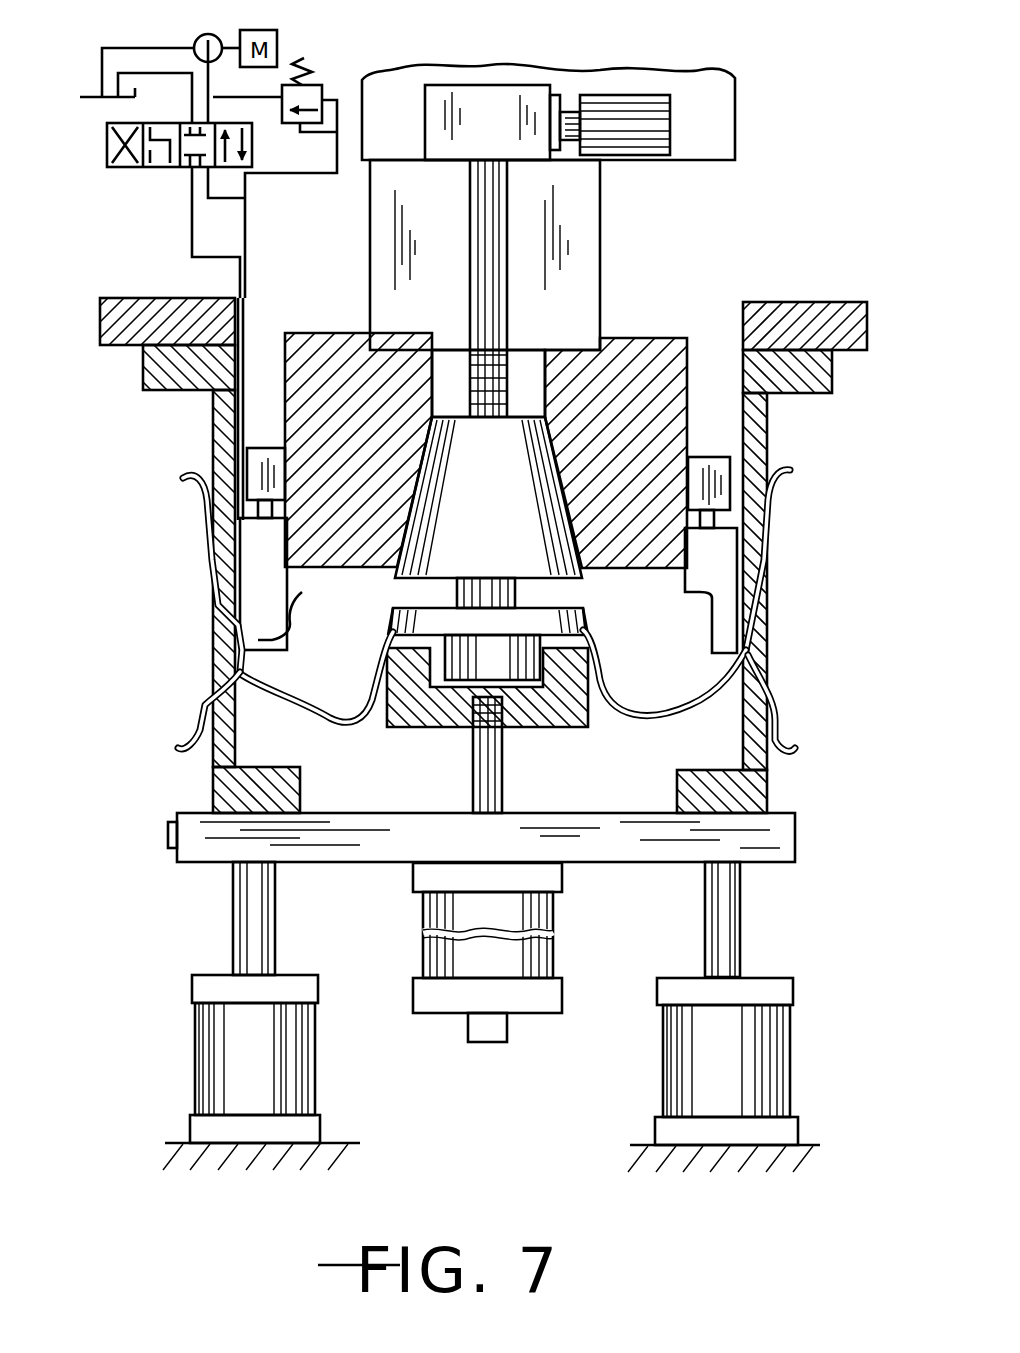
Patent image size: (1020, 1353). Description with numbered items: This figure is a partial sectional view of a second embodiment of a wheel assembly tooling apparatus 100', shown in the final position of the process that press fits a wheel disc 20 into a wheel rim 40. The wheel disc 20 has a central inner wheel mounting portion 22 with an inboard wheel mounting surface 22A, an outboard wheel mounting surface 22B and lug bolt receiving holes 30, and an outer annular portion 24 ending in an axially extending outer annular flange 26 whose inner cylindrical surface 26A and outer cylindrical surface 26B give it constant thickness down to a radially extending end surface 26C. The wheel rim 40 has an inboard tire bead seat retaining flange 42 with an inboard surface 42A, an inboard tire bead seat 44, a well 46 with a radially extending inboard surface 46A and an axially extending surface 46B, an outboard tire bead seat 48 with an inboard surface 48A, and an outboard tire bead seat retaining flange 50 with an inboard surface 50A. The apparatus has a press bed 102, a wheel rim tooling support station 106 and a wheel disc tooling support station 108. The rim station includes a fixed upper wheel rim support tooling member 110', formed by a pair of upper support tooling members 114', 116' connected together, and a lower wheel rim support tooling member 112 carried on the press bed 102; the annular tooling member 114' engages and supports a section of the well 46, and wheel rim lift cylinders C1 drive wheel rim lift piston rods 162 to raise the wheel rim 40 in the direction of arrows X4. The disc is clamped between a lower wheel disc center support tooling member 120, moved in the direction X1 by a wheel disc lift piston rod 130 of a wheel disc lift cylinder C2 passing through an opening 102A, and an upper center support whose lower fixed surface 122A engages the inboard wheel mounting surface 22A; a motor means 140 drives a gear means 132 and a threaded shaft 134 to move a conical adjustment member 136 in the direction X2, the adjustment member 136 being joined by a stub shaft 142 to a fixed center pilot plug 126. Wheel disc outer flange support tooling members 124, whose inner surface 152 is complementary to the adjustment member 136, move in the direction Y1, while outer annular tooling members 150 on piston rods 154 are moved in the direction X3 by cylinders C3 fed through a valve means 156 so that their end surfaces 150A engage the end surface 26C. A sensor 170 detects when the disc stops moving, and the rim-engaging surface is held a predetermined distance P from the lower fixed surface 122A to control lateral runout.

The wheel assembly tooling apparatus 100' is at (97, 480).
The press bed 102 is at (798, 845).
The opening 102A is at (480, 862).
The wheel rim tooling support station 106 is at (808, 418).
The wheel disc tooling support station 108 is at (510, 772).
The upper wheel rim support tooling member 110' is at (808, 498).
The lower wheel rim support tooling member 112 is at (305, 780).
The upper support tooling member 114' is at (153, 556).
The upper support tooling member 116' is at (153, 293).
The lower wheel disc center support tooling member 120 is at (572, 730).
The lower fixed surface 122A is at (562, 627).
The wheel disc outer flange support tooling member 124 is at (325, 348).
The fixed center pilot plug 126 is at (500, 680).
The wheel disc lift piston rod 130 is at (505, 792).
The gear means 132 is at (565, 58).
The threaded shaft 134 is at (478, 222).
The adjustment member 136 is at (518, 485).
The motor means 140 is at (672, 120).
The stub shaft 142 is at (520, 598).
The outer annular tooling member 150 is at (283, 598).
The end surface 150A is at (280, 618).
The inner surface 152 is at (437, 470).
The piston rod 154 is at (215, 495).
The valve means 156 is at (158, 180).
The wheel rim lift piston rod 162 is at (276, 915).
The sensor 170 is at (540, 1032).
The wheel disc 20 is at (752, 680).
The inner wheel mounting portion 22 is at (602, 672).
The inboard wheel mounting surface 22A is at (590, 640).
The outboard wheel mounting surface 22B is at (422, 746).
The outer annular portion 24 is at (655, 718).
The outer annular flange 26 is at (755, 662).
The inner axially extending cylindrical surface 26A is at (262, 667).
The outer axially extending cylindrical surface 26B is at (230, 655).
The radially extending end surface 26C is at (225, 618).
The lug bolt receiving holes 30 is at (393, 626).
The wheel rim 40 is at (770, 590).
The inboard tire bead seat retaining flange 42 is at (780, 500).
The inboard surface 42A is at (800, 478).
The inboard tire bead seat 44 is at (775, 530).
The well 46 is at (770, 565).
The inboard surface 46A is at (215, 700).
The axially extending surface 46B is at (345, 722).
The outboard tire bead seat 48 is at (782, 720).
The inboard surface 48A is at (200, 725).
The outboard tire bead seat retaining flange 50 is at (782, 740).
The inboard surface 50A is at (800, 770).
The wheel rim lift cylinders C1 is at (318, 1045).
The wheel disc lift cylinder C2 is at (560, 910).
The cylinders C3 is at (258, 448).
The predetermined distance P is at (770, 487).
The direction of movement of lower center support X1 is at (463, 757).
The direction of movement of adjustment member X2 is at (490, 512).
The direction of movement of tooling members X3 is at (263, 600).
The direction of rim lifting X4 is at (218, 950).
The direction of movement of flange support members Y1 is at (385, 495).